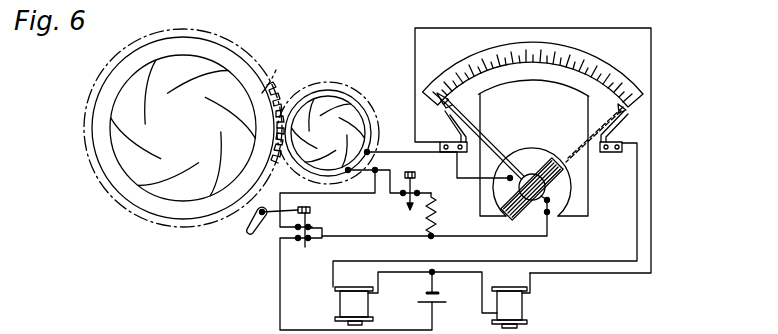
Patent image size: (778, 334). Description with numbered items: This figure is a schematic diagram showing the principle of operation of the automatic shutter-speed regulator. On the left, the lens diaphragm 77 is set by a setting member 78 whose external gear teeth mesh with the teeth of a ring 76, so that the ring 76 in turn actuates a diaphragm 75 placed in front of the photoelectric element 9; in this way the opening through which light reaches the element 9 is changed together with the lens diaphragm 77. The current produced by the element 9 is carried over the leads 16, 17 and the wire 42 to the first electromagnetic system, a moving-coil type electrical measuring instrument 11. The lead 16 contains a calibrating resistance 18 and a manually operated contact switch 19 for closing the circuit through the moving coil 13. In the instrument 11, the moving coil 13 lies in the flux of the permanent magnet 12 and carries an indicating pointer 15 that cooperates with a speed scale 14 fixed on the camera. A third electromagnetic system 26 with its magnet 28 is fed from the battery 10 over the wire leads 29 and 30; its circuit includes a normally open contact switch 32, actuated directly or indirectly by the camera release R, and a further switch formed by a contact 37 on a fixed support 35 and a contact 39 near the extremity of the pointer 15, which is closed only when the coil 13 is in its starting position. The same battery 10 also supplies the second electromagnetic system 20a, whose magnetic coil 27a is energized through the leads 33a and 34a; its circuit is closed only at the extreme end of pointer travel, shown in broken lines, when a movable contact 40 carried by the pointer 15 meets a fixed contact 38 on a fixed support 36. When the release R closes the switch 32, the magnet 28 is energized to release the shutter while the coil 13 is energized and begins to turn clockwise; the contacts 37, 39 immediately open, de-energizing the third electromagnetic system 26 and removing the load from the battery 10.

The lens diaphragm 77 is at (182, 63).
The setting member 78 is at (262, 93).
The ring 76 is at (288, 102).
The photoelectric element 9 is at (331, 124).
The diaphragm 75 is at (313, 110).
The lead 17 is at (401, 154).
The lead 16 is at (352, 173).
The wire 42 is at (340, 194).
The contact switch 32 is at (322, 227).
The camera release R is at (247, 230).
The contact switch 19 is at (418, 181).
The calibrating resistance 18 is at (438, 212).
The lead 34a is at (393, 261).
The second electromagnetic system 20a is at (322, 287).
The magnetic coil 27a is at (340, 302).
The lead 33a is at (413, 273).
The wire lead 30 is at (446, 275).
The battery 10 is at (438, 303).
The magnet 28 is at (515, 306).
The third electromagnetic system 26 is at (548, 293).
The wire lead 29 is at (613, 274).
The electrical measuring instrument 11 is at (606, 177).
The moving coil 13 is at (552, 181).
The pointer 15 is at (484, 134).
The permanent magnet 12 is at (540, 90).
The speed scale 14 is at (523, 45).
The movable contact 40 is at (446, 106).
The contact 39 is at (440, 103).
The contact 37 is at (438, 116).
The fixed support 35 is at (452, 125).
The contact 38 is at (628, 112).
The fixed support 36 is at (620, 124).